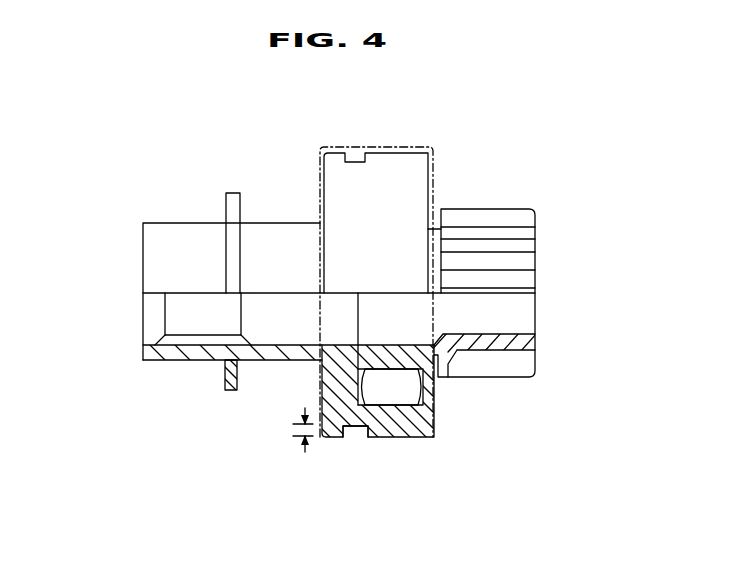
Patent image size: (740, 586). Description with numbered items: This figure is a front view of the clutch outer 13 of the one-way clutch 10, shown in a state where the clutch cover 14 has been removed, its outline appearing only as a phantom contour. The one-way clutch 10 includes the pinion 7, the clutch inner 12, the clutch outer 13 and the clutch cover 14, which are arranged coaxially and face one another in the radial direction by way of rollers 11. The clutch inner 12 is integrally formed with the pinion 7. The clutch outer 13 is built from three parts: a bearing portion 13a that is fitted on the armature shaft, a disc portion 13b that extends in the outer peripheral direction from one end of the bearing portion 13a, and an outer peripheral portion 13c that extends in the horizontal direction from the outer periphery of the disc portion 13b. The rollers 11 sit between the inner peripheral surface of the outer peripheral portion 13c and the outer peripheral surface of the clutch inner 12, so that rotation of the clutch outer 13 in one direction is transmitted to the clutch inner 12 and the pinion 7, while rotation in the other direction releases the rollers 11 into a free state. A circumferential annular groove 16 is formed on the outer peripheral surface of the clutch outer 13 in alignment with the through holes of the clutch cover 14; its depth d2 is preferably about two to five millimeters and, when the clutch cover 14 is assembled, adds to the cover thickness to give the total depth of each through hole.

The one-way clutch 10 is at (183, 118).
The clutch outer 13 is at (150, 213).
The bearing portion 13a is at (165, 353).
The disc portion 13b is at (328, 375).
The outer peripheral portion 13c is at (387, 423).
The annular groove 16 is at (351, 168).
The clutch cover 14 is at (402, 146).
The pinion 7 is at (497, 218).
The clutch inner 12 is at (380, 352).
The rollers 11 is at (403, 393).
The depth of the annular groove d2 is at (305, 452).